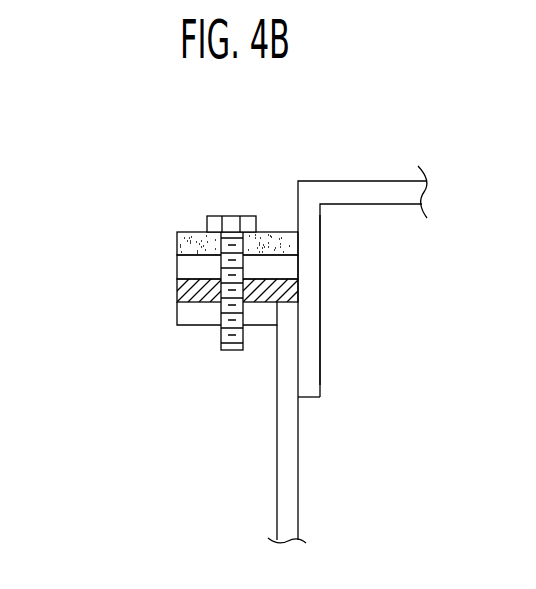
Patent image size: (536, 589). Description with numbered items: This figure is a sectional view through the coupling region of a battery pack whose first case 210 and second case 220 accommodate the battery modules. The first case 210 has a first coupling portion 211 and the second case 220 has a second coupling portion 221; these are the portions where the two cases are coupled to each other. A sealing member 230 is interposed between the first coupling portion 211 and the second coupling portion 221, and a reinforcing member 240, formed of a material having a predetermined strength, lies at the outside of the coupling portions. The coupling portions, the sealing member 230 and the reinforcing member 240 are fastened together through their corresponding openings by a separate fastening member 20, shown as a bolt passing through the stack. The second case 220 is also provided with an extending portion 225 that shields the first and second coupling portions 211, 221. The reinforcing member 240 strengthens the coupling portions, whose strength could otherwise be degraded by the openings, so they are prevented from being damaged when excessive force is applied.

The fastening member 20 is at (232, 216).
The first case 210 is at (270, 463).
The first coupling portion 211 is at (192, 316).
The second case 220 is at (389, 165).
The second coupling portion 221 is at (192, 270).
The extending portion 225 is at (313, 350).
The sealing member 230 is at (173, 286).
The reinforcing member 240 is at (175, 238).